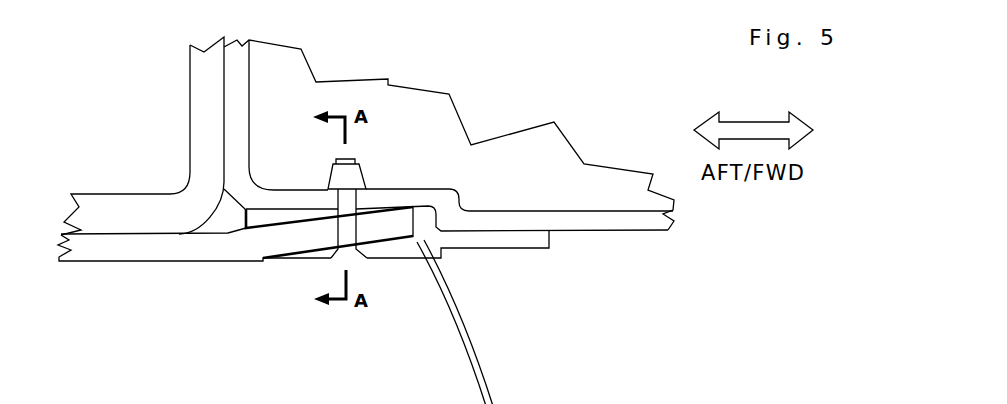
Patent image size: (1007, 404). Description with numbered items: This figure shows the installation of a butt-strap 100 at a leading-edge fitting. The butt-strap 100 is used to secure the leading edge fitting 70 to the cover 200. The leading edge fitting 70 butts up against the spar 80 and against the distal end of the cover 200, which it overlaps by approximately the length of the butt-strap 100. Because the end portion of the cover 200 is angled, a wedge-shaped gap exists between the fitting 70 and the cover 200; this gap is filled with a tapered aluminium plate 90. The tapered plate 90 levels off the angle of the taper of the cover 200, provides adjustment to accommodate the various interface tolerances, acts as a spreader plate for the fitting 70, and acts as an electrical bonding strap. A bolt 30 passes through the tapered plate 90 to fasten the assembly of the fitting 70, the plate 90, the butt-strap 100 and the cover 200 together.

The bolt 30 is at (345, 208).
The leading edge fitting 70 is at (422, 132).
The spar 80 is at (202, 165).
The tapered aluminium plate 90 is at (289, 212).
The butt-strap 100 is at (455, 230).
The cover 200 is at (178, 245).